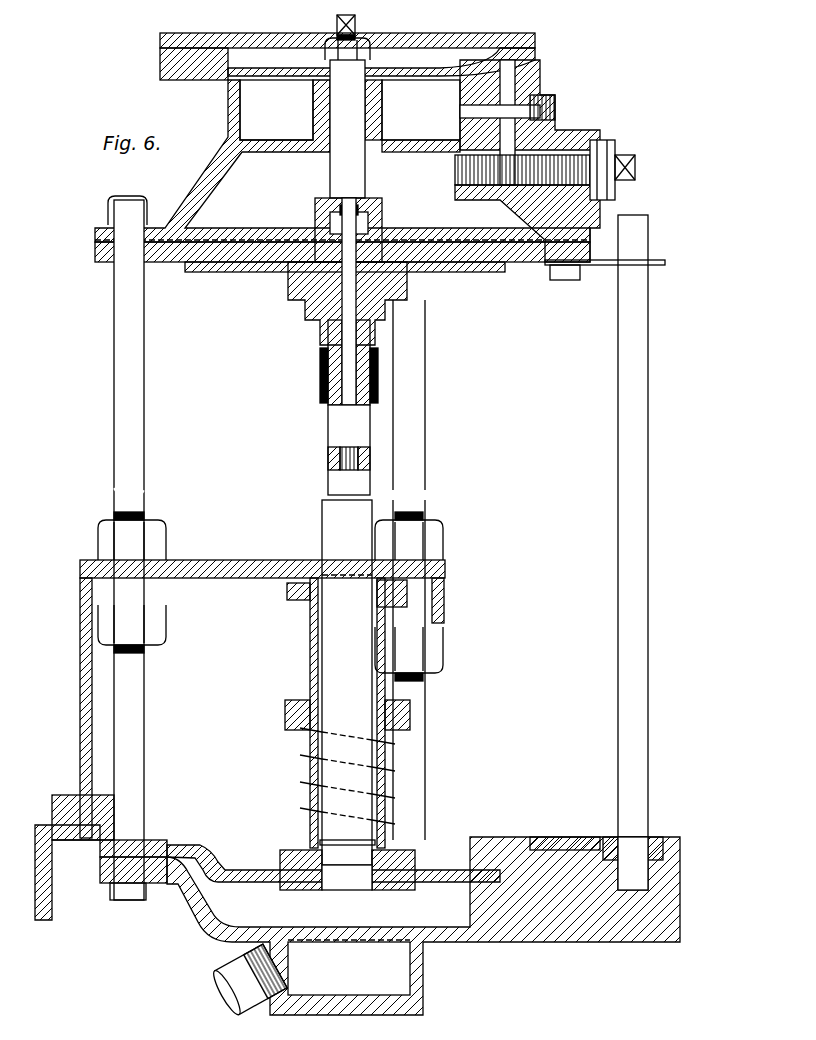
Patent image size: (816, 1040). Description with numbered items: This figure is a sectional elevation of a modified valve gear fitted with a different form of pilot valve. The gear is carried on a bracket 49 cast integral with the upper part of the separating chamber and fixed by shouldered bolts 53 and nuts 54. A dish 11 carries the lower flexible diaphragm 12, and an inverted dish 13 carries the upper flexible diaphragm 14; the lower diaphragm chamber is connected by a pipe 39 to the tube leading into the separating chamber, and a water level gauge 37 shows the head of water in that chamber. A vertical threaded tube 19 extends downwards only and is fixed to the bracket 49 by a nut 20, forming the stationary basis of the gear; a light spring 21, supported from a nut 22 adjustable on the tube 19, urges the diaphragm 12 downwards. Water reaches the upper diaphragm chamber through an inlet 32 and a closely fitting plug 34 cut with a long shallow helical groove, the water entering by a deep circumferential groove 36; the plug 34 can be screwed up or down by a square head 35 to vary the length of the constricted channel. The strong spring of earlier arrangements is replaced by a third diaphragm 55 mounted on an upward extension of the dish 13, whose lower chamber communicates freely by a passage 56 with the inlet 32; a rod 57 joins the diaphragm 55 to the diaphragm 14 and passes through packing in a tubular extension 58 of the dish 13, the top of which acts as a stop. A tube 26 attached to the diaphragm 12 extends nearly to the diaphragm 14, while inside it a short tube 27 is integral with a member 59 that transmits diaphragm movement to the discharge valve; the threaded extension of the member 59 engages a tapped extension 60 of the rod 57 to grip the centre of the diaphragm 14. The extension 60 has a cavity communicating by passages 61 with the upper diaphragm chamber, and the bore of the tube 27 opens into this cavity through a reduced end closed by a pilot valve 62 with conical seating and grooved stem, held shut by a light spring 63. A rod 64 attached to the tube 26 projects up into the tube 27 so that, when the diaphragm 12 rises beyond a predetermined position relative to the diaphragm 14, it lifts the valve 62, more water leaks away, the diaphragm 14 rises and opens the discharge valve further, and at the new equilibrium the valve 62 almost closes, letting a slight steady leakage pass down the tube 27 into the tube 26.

The dish 11 is at (188, 920).
The flexible diaphragm 12 is at (236, 884).
The inverted dish 13 is at (200, 180).
The flexible diaphragm 14 is at (233, 262).
The vertical threaded tube 19 is at (310, 660).
The nut 20 is at (298, 600).
The light spring 21 is at (300, 797).
The nut 22 is at (300, 706).
The tube 26 is at (322, 438).
The tube 27 is at (322, 350).
The water inlet 32 is at (556, 110).
The plug 34 is at (456, 172).
The square head 35 is at (627, 152).
The circumferential groove 36 is at (508, 190).
The water level gauge 37 is at (618, 568).
The pipe 39 is at (238, 968).
The bracket 49 is at (272, 563).
The shouldered bolts 53 is at (145, 402).
The nuts 54 is at (160, 540).
The third diaphragm 55 is at (421, 110).
The passage 56 is at (478, 112).
The rod 57 is at (330, 170).
The tubular extension 58 is at (318, 106).
The member 59 is at (380, 305).
The tapped extension 60 is at (385, 246).
The passages 61 is at (318, 224).
The valve 62 is at (296, 300).
The light spring 63 is at (385, 222).
The rod 64 is at (352, 335).